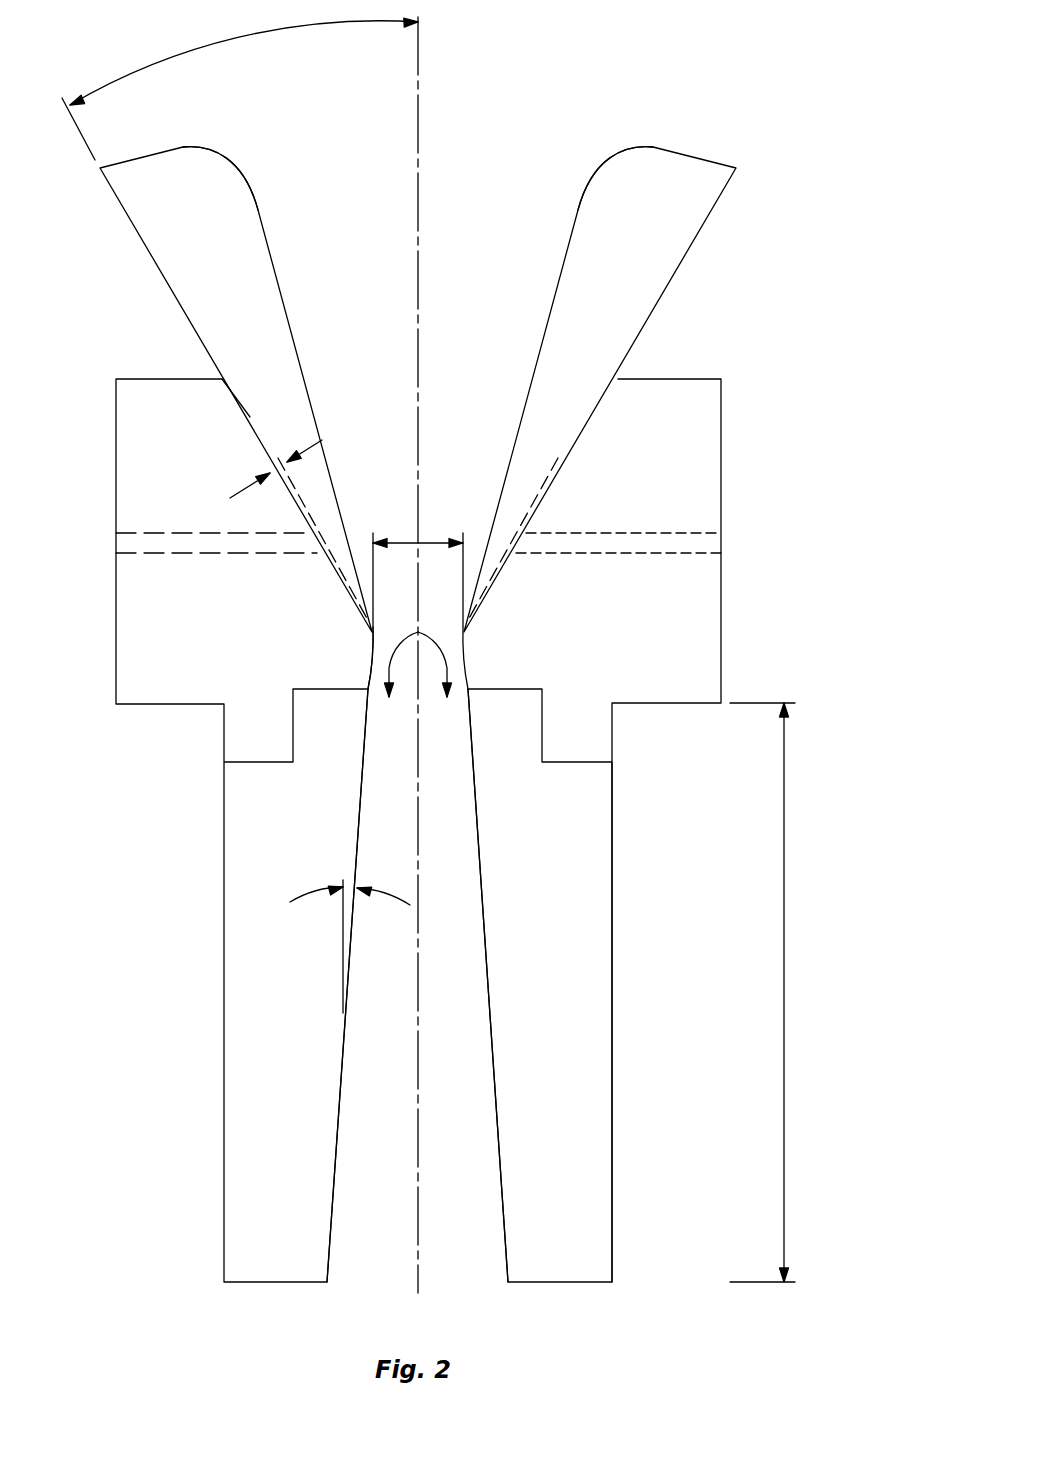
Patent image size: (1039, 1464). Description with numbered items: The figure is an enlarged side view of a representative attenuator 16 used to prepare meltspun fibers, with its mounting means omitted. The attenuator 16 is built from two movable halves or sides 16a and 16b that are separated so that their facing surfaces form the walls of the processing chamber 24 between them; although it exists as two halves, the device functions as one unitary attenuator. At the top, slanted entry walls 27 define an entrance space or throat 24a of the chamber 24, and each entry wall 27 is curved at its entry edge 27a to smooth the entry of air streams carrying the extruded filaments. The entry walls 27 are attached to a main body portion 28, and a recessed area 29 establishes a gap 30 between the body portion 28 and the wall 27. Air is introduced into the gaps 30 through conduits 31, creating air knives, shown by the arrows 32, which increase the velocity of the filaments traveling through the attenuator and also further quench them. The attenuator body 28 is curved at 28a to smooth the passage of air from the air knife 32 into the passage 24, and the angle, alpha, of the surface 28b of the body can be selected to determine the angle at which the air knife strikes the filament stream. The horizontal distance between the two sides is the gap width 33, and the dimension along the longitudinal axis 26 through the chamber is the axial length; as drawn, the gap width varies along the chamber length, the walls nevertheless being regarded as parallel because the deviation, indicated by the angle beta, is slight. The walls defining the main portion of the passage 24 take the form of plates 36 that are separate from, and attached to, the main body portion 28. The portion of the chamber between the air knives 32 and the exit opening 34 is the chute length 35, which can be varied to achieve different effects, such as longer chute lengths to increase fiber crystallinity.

The attenuator 16 is at (753, 73).
The first side of attenuator 16a is at (652, 355).
The second side of attenuator 16b is at (185, 355).
The processing chamber 24 is at (461, 835).
The entrance space 24a is at (511, 323).
The longitudinal axis 26 is at (415, 340).
The slanted entry wall 27 is at (133, 213).
The entry edge 27a is at (220, 155).
The main body portion 28 is at (128, 415).
The curved portion of attenuator body 28a is at (470, 640).
The surface of attenuator body 28b is at (250, 417).
The recessed area 29 is at (332, 570).
The gap 30 is at (248, 490).
The conduit 31 is at (695, 528).
The air knife 32 is at (418, 655).
The gap width 33 is at (422, 547).
The exit opening 34 is at (327, 1282).
The chute length 35 is at (784, 978).
The plate 36 is at (600, 1030).
The angle of surface of attenuator body alpha is at (222, 45).
The channel taper angle beta is at (290, 902).